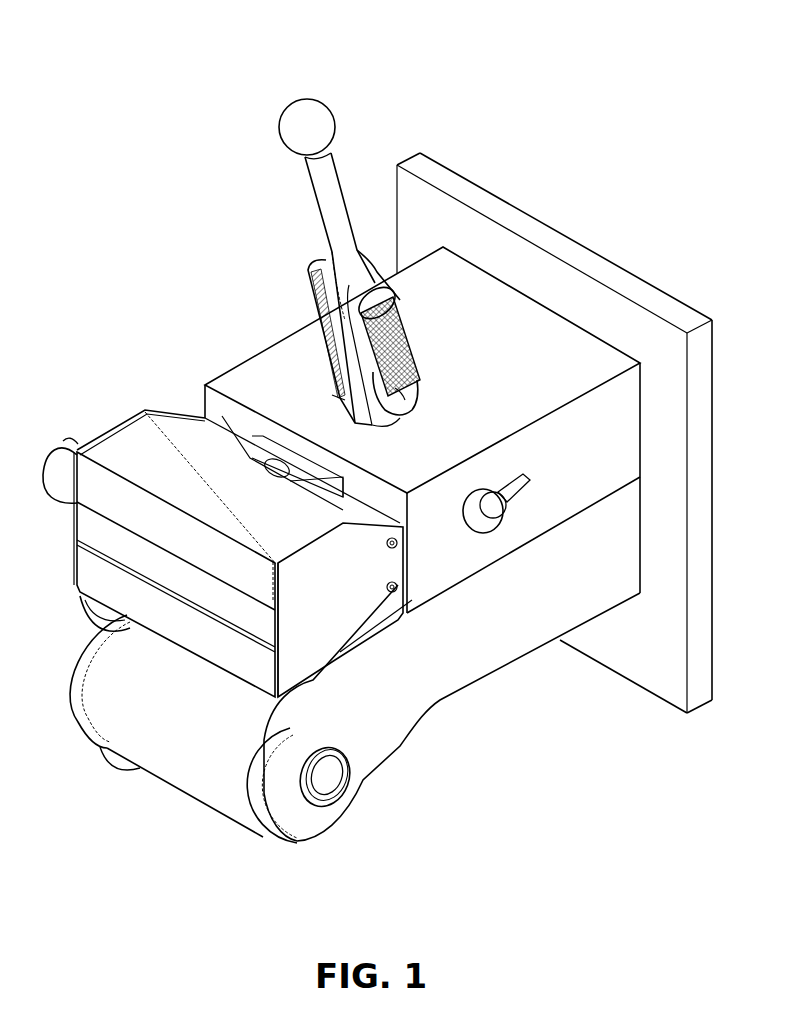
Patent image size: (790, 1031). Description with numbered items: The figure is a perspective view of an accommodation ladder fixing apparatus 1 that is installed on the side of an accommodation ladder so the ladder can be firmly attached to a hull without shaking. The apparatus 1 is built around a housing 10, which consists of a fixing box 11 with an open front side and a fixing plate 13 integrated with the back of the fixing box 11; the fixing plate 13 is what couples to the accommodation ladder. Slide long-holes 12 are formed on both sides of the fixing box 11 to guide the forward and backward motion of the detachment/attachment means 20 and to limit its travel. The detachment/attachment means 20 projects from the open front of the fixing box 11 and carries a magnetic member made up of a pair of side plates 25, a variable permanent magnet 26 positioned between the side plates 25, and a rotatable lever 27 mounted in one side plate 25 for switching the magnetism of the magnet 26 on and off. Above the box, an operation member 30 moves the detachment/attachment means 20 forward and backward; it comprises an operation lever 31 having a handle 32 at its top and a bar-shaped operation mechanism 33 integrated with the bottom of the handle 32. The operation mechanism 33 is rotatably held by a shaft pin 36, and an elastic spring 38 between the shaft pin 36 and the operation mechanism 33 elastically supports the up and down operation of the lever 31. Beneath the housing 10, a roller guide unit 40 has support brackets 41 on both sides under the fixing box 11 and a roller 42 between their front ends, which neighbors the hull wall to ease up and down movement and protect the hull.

The accommodation ladder fixing apparatus 1 is at (72, 29).
The housing 10 is at (458, 360).
The fixing box 11 is at (500, 333).
The slide long-holes 12 is at (527, 488).
The fixing plate 13 is at (613, 268).
The detachment/attachment means 20 is at (343, 391).
The side plates 25 is at (318, 596).
The variable permanent magnet 26 is at (223, 648).
The rotatable lever 27 is at (73, 600).
The operation member 30 is at (412, 239).
The operation lever 31 is at (230, 202).
The handle 32 is at (325, 205).
The operation mechanism 33 is at (330, 309).
The shaft pin 36 is at (413, 400).
The elastic spring 38 is at (413, 348).
The roller guide unit 40 is at (298, 840).
The support brackets 41 is at (510, 618).
The roller 42 is at (195, 783).